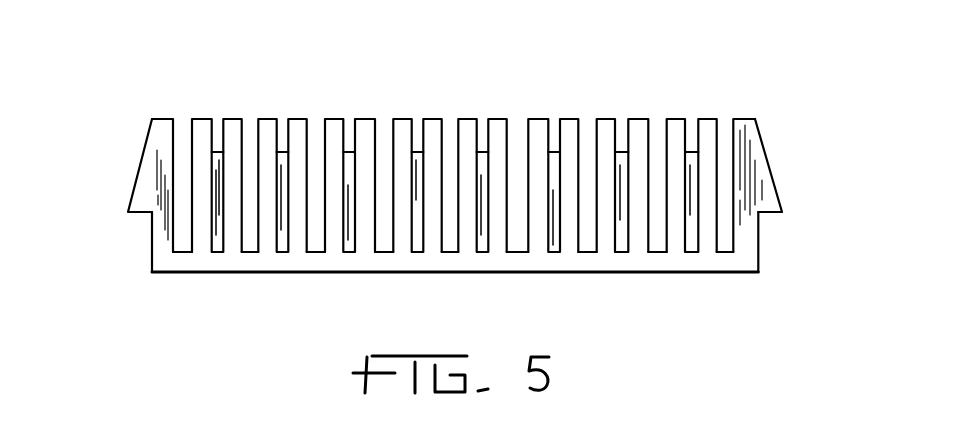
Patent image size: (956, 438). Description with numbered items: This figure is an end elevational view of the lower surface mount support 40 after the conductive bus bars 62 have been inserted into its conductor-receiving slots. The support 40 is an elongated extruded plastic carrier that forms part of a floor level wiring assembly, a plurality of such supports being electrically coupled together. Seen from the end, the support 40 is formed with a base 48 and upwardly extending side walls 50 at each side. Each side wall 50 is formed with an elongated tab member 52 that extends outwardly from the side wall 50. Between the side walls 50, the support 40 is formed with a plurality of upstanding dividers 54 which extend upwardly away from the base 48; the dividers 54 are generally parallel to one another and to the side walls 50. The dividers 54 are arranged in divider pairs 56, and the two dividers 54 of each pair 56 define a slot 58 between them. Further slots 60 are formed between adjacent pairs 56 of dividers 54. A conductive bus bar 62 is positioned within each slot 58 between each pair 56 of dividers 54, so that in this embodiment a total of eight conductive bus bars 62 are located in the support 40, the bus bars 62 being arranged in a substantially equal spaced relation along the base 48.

The surface mount support 40 is at (454, 178).
The base 48 is at (552, 262).
The side walls 50 is at (163, 227).
The elongated tab member 52 is at (130, 222).
The upstanding dividers 54 is at (200, 125).
The divider pairs 56 is at (445, 113).
The slot 58 is at (553, 125).
The slots 60 is at (309, 143).
The conductive bus bar 62 is at (418, 205).